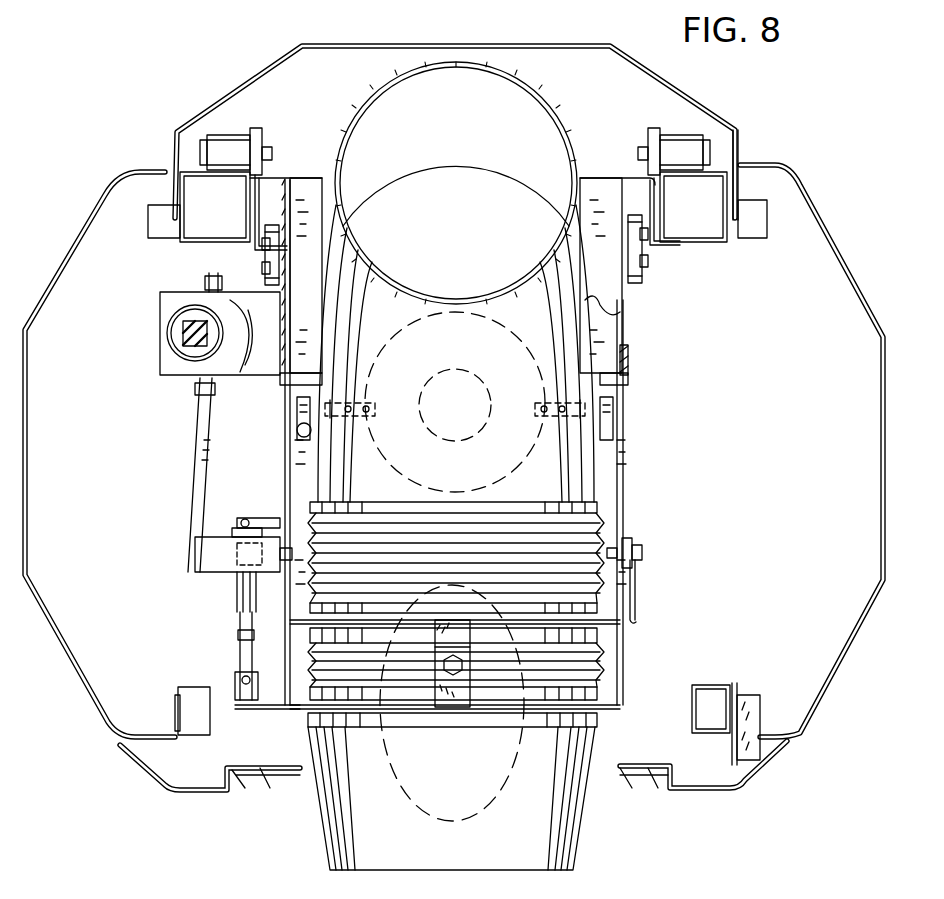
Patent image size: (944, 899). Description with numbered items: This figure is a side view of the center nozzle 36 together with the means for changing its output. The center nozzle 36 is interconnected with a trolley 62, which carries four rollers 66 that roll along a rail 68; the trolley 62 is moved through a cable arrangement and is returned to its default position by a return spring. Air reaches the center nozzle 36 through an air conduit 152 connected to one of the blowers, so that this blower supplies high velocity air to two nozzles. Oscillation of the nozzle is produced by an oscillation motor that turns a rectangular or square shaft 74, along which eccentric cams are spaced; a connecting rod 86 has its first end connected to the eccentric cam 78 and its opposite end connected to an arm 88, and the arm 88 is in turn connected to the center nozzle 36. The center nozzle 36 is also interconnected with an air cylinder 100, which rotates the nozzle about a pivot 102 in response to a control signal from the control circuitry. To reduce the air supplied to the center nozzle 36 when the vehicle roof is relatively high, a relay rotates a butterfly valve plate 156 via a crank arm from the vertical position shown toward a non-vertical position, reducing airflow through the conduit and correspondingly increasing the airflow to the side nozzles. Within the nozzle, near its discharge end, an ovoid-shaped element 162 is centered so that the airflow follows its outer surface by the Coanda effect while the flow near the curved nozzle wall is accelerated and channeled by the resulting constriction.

The air conduit 152 is at (480, 90).
The rollers 66 is at (235, 148).
The rail 68 is at (182, 242).
The eccentric cam 78 is at (197, 283).
The square shaft 74 is at (185, 335).
The connecting rod 86 is at (196, 450).
The arm 88 is at (215, 575).
The air cylinder 100 is at (246, 600).
The pivot 102 is at (636, 540).
The trolley 62 is at (610, 322).
The butterfly valve plate 156 is at (366, 453).
The ovoid-shaped element 162 is at (405, 790).
The center nozzle 36 is at (365, 842).